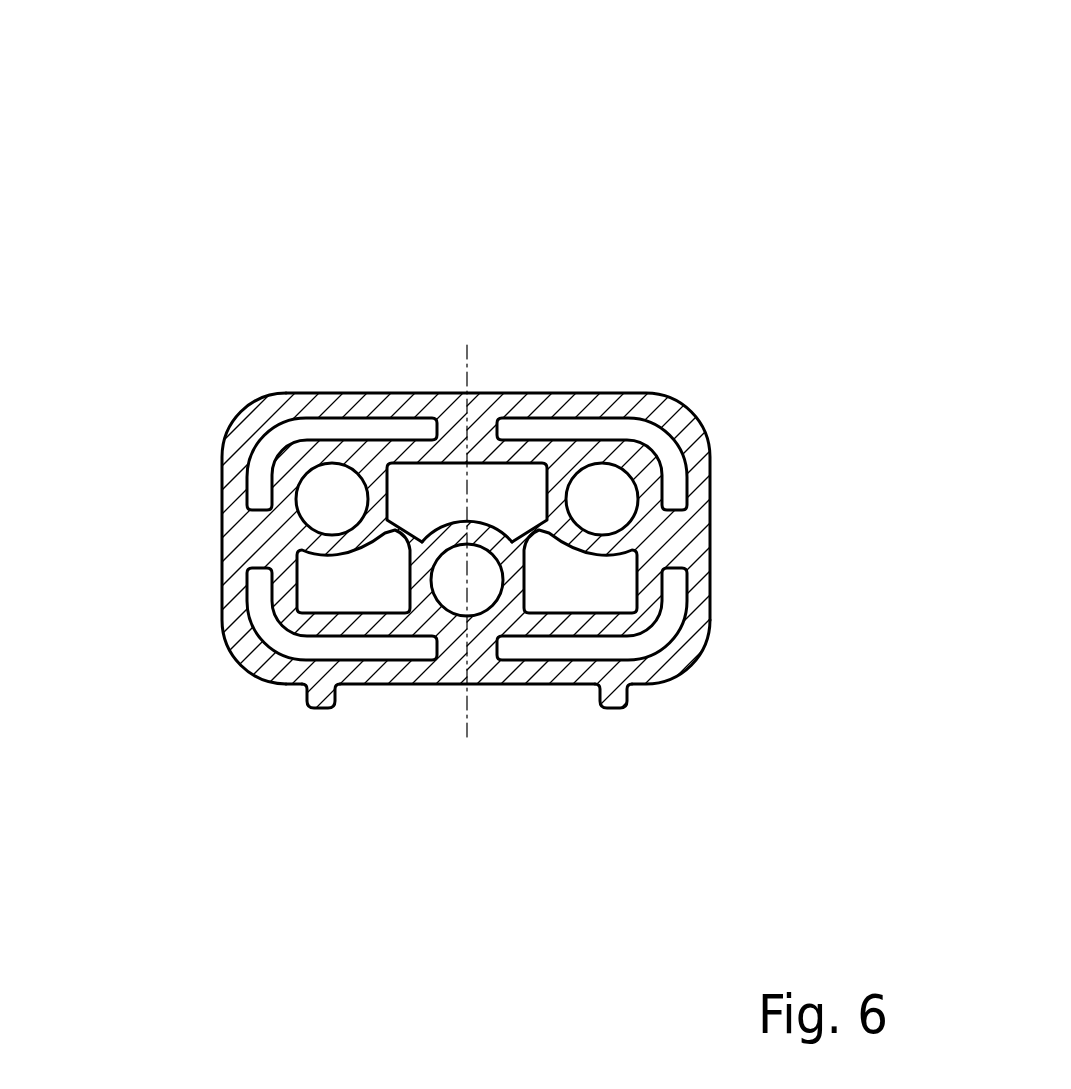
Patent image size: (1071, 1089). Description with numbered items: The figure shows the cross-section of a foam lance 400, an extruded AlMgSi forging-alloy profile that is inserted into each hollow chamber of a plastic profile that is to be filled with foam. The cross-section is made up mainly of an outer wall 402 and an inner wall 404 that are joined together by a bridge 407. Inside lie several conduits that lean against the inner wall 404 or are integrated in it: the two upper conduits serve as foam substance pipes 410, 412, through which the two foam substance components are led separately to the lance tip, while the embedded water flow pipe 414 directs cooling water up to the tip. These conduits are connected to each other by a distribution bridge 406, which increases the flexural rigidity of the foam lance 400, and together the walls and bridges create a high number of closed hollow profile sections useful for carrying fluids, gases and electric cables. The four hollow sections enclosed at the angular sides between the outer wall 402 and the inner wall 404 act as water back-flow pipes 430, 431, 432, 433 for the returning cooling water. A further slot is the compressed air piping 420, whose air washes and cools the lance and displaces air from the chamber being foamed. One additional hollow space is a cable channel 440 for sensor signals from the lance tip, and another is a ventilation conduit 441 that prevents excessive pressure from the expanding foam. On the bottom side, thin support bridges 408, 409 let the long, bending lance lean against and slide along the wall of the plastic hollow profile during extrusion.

The foam lance 400 is at (714, 153).
The outer wall 402 is at (703, 452).
The inner wall 404 is at (630, 641).
The distribution bridge 406 is at (524, 520).
The bridge 407 is at (253, 507).
The support bridge 408 is at (320, 700).
The support bridge 409 is at (617, 718).
The foam substance pipe 410 is at (332, 490).
The foam substance pipe 412 is at (600, 495).
The water flow pipe 414 is at (452, 590).
The compressed air piping 420 is at (421, 490).
The water back-flow pipe 430 is at (280, 438).
The water back-flow pipe 431 is at (653, 440).
The water back-flow pipe 432 is at (690, 667).
The water back-flow pipe 433 is at (272, 640).
The cable channel 440 is at (322, 578).
The ventilation conduit 441 is at (572, 585).